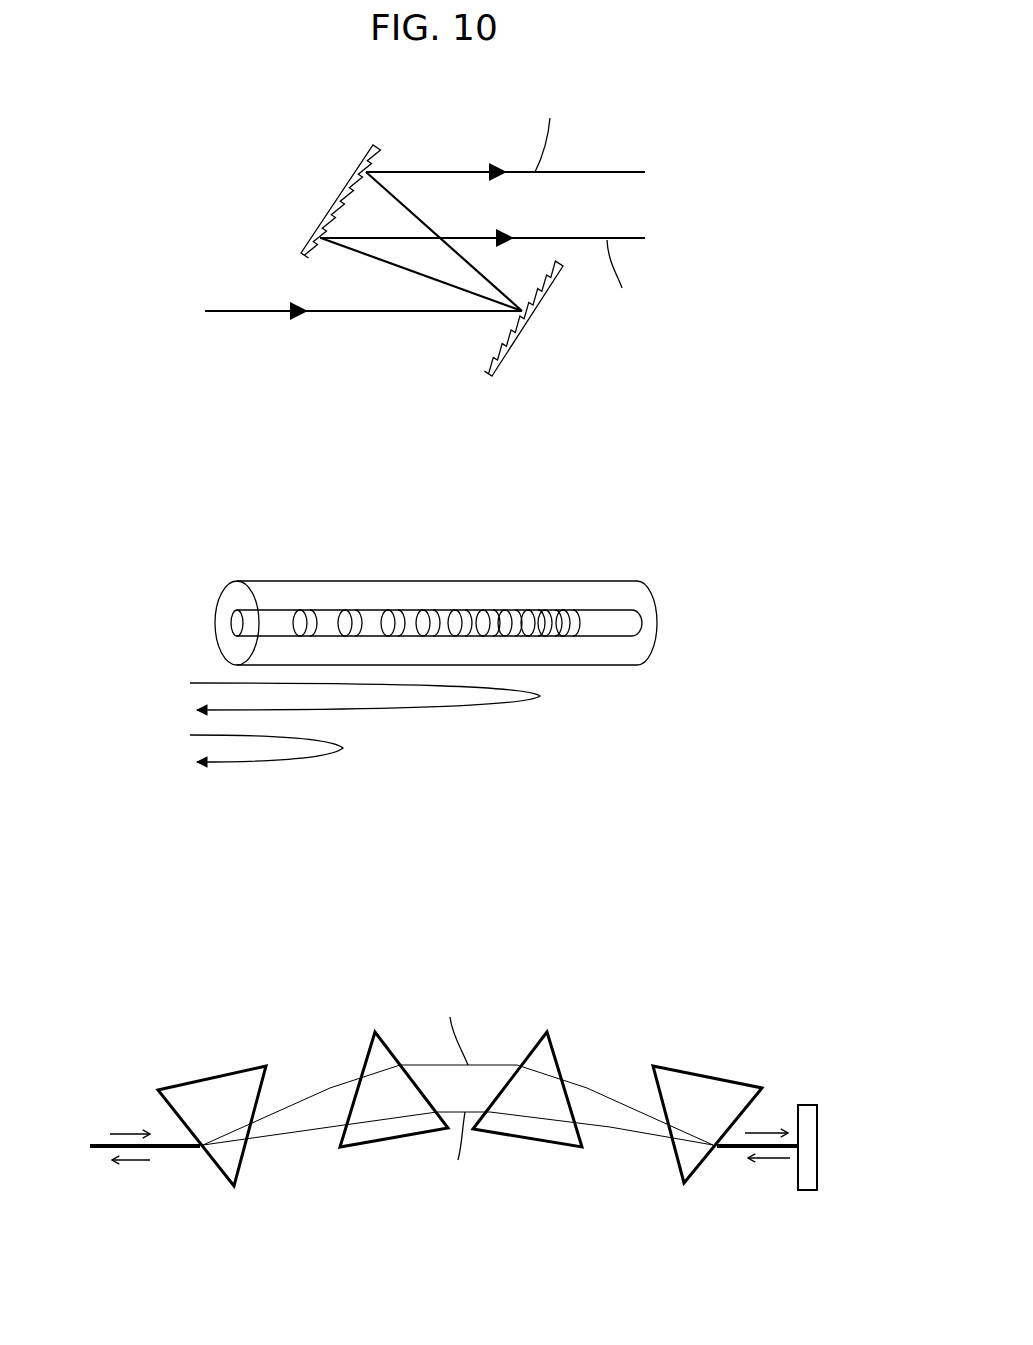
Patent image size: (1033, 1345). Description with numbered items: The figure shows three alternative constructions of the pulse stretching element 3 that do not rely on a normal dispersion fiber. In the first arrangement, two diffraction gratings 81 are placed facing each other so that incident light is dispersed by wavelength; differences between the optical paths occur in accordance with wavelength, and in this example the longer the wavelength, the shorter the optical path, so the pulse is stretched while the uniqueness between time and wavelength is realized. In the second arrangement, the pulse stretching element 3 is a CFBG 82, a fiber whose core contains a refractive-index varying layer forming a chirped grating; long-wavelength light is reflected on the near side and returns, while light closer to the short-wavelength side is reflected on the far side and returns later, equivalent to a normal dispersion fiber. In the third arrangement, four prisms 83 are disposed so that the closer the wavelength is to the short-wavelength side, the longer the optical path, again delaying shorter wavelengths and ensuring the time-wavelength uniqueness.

The pulse stretching element 3 is at (218, 147).
The diffraction grating 81 is at (333, 196).
The CFBG 82 is at (309, 580).
The prism 83 is at (203, 1078).